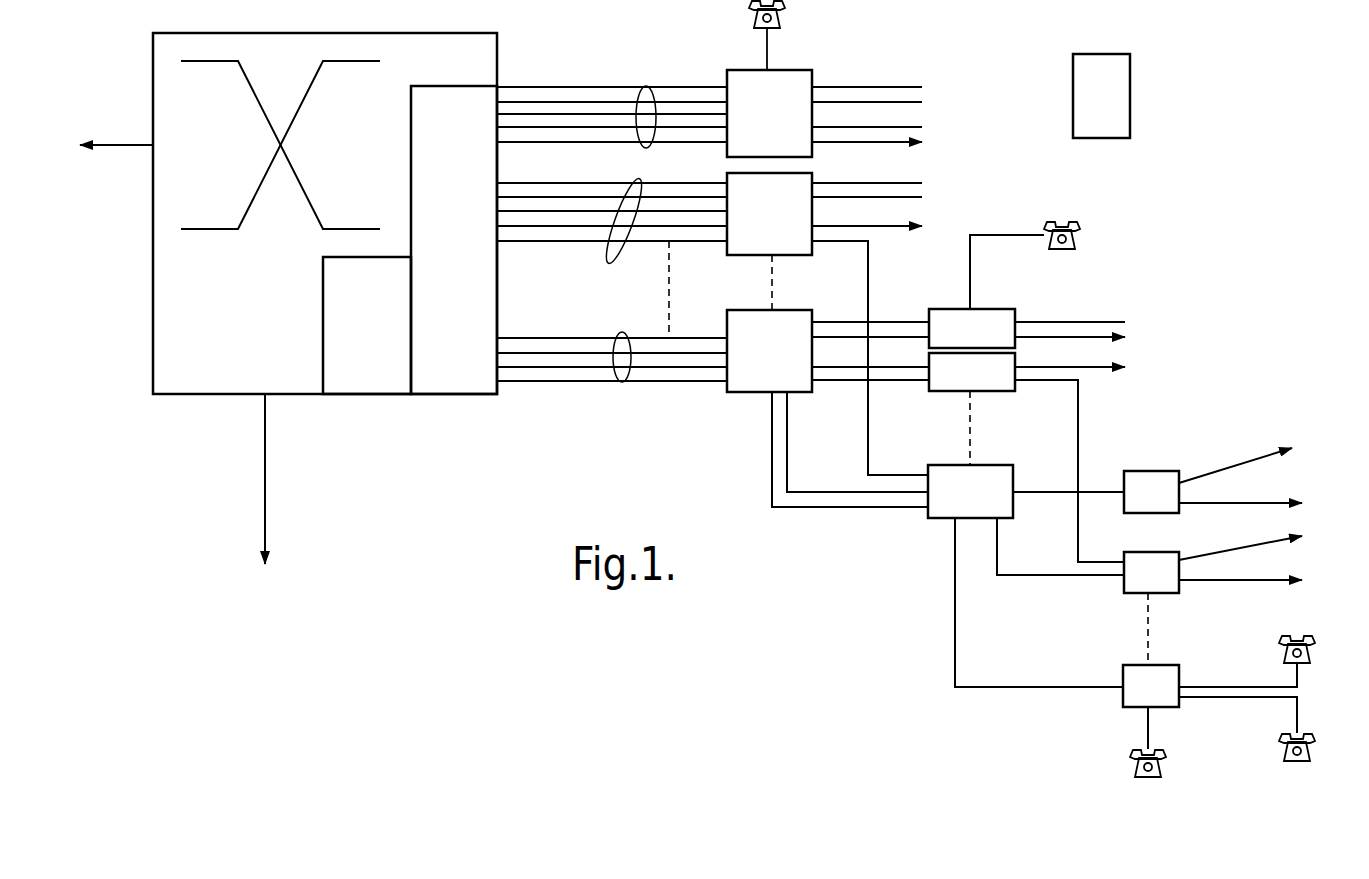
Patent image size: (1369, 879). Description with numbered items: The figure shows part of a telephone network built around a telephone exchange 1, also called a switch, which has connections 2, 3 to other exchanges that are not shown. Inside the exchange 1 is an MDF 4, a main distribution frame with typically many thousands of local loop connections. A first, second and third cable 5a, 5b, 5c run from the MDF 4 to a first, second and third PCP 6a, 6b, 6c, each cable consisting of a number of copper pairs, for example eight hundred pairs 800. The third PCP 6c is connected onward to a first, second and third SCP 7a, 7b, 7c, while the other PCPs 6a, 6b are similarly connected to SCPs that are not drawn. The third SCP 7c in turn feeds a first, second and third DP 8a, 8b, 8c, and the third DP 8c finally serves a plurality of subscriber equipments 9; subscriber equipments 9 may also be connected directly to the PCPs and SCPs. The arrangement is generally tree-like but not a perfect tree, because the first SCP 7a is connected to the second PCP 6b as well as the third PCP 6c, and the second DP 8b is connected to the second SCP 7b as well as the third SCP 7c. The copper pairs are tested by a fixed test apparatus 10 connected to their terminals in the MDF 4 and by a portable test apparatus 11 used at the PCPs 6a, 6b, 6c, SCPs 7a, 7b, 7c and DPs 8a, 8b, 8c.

The telephone exchange 1 is at (300, 48).
The connection to other exchanges 2 is at (127, 145).
The connection to other exchanges 3 is at (266, 500).
The MDF (Main Distribution Frame) 4 is at (500, 80).
The first cable 5a is at (570, 112).
The second cable 5b is at (530, 210).
The third cable 5c is at (537, 352).
The first PCP (Primary Connection Point) 6a is at (792, 70).
The second PCP (Primary Connection Point) 6b is at (814, 176).
The third PCP (Primary Connection Point) 6c is at (789, 310).
The first SCP (Secondary Connection Point) 7a is at (1016, 312).
The second SCP (Secondary Connection Point) 7b is at (1000, 393).
The third SCP (Secondary Connection Point) 7c is at (935, 519).
The first DP (Distribution Point) 8a is at (1153, 471).
The second DP (Distribution Point) 8b is at (1120, 584).
The third DP (Distribution Point) 8c is at (1121, 697).
The subscriber equipment 9 is at (787, 6).
The fixed test apparatus 10 is at (382, 341).
The portable test apparatus 11 is at (1131, 88).
The copper pairs 800 is at (645, 86).